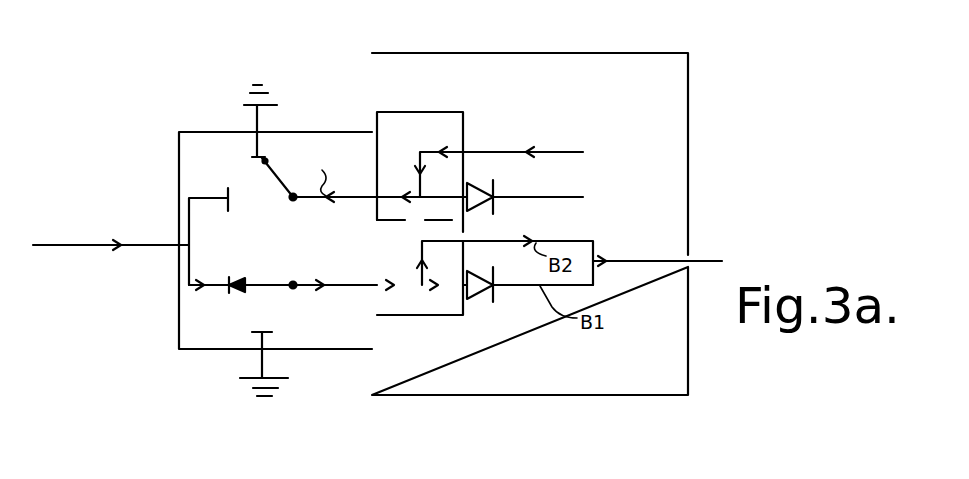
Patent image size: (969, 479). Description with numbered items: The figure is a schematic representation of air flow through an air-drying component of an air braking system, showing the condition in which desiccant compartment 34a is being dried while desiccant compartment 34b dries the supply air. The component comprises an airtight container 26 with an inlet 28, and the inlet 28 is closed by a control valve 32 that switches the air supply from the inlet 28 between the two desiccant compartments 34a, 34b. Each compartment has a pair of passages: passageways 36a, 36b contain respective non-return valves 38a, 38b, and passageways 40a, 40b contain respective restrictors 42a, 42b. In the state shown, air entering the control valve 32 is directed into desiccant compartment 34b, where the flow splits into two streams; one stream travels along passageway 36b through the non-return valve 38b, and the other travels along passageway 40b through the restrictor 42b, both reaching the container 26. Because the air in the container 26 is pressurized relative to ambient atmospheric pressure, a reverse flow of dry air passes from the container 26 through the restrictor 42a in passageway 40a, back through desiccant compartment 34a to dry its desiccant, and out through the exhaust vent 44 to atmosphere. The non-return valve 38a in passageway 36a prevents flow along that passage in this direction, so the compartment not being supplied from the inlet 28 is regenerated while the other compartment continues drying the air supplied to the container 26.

The airtight container 26 is at (655, 52).
The inlet 28 is at (79, 248).
The control valve 32 is at (325, 350).
The desiccant compartment 34a is at (410, 112).
The desiccant compartment 34b is at (415, 318).
The passageway 36a is at (583, 197).
The passageway 36b is at (593, 285).
The non-return valve 38a is at (494, 184).
The non-return valve 38b is at (494, 292).
The passageway 40a is at (583, 152).
The passageway 40b is at (592, 241).
The restrictor 42a is at (483, 151).
The restrictor 42b is at (478, 229).
The exhaust vent 44 is at (262, 118).